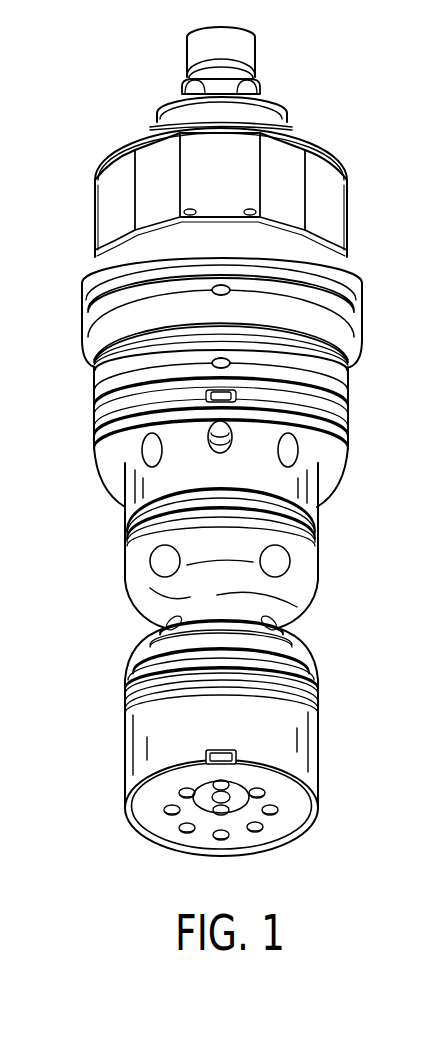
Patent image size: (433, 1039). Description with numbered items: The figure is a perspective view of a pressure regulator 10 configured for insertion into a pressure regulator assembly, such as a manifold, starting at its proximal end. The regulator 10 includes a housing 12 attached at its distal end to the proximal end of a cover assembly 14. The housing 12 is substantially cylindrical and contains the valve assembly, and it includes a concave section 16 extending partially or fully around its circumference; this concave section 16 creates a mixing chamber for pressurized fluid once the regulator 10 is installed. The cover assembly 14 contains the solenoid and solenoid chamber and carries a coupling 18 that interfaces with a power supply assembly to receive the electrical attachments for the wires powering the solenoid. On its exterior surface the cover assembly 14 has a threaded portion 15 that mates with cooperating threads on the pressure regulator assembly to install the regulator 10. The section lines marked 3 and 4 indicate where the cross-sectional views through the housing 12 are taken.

The pressure regulator 10 is at (100, 74).
The housing 12 is at (124, 765).
The cover assembly 14 is at (338, 173).
The threaded portion 15 is at (82, 305).
The concave section 16 is at (130, 633).
The coupling 18 is at (250, 34).
The section line 3- 3 is at (388, 463).
The section line 4- 4 is at (150, 447).